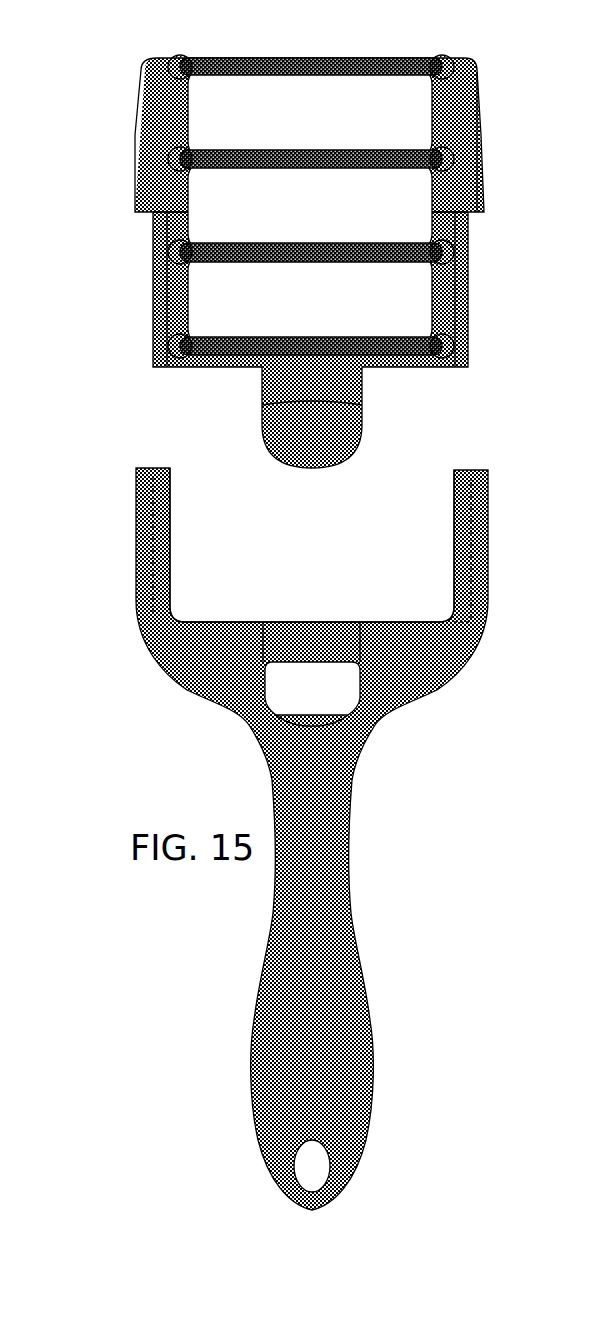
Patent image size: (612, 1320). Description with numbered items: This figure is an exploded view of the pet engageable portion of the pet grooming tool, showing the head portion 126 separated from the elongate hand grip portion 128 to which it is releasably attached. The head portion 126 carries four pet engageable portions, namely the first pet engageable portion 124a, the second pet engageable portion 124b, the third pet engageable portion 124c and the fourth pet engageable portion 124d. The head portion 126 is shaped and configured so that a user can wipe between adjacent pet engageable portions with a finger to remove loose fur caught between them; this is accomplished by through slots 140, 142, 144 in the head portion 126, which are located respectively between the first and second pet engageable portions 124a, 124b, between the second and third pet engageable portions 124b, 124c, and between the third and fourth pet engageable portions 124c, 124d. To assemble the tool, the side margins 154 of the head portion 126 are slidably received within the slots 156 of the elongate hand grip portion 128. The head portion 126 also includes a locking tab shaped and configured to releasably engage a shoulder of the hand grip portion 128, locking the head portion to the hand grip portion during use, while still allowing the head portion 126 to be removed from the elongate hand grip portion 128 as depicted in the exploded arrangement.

The first pet engageable portion 124a is at (455, 355).
The second pet engageable portion 124b is at (455, 262).
The third pet engageable portion 124c is at (475, 172).
The fourth pet engageable portion 124d is at (475, 78).
The head portion 126 is at (452, 127).
The elongate hand grip portion 128 is at (345, 923).
The through slot 140 is at (192, 299).
The through slot 142 is at (192, 227).
The through slot 144 is at (192, 110).
The side margins 154 is at (463, 300).
The slots 156 is at (167, 487).